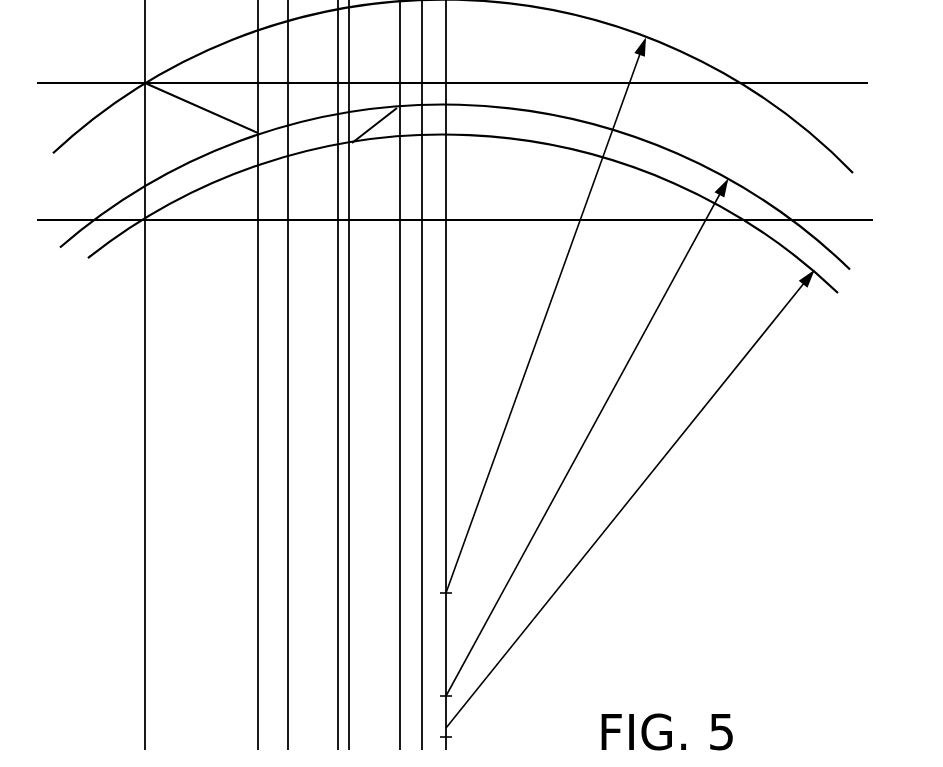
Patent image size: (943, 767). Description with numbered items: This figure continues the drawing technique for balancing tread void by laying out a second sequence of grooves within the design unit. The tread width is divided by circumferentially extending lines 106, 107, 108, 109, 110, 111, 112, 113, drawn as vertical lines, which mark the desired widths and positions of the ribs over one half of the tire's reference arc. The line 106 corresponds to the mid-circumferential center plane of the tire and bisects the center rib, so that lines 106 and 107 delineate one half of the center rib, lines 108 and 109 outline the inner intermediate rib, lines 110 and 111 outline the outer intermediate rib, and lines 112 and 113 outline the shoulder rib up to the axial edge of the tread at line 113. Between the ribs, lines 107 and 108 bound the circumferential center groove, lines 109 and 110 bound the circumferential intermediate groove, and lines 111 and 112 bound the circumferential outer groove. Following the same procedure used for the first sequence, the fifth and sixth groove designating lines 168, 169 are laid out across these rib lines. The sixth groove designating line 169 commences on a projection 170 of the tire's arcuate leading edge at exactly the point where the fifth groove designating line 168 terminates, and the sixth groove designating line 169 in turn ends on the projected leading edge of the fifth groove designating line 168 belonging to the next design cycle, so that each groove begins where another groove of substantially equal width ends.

The circumferentially extending line 106 is at (446, 245).
The circumferentially extending line 107 is at (422, 295).
The circumferentially extending line 108 is at (400, 268).
The circumferentially extending line 109 is at (349, 398).
The circumferentially extending line 110 is at (338, 448).
The circumferentially extending line 111 is at (288, 330).
The circumferentially extending line 112 is at (258, 357).
The circumferentially extending line 113 is at (145, 432).
The fifth groove designating line 168 is at (187, 103).
The sixth groove designating line 169 is at (375, 130).
The projection of the tire's leading edge 170 is at (657, 143).